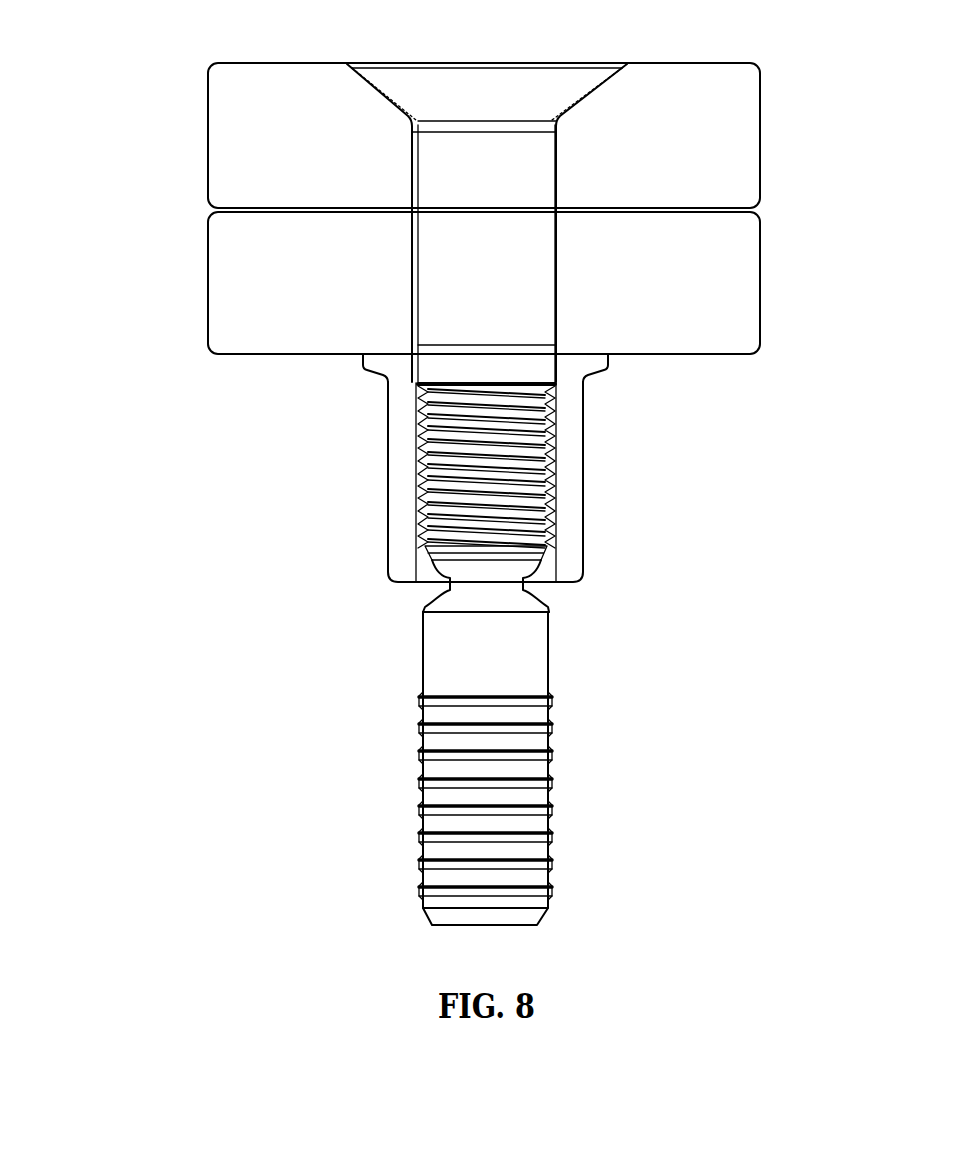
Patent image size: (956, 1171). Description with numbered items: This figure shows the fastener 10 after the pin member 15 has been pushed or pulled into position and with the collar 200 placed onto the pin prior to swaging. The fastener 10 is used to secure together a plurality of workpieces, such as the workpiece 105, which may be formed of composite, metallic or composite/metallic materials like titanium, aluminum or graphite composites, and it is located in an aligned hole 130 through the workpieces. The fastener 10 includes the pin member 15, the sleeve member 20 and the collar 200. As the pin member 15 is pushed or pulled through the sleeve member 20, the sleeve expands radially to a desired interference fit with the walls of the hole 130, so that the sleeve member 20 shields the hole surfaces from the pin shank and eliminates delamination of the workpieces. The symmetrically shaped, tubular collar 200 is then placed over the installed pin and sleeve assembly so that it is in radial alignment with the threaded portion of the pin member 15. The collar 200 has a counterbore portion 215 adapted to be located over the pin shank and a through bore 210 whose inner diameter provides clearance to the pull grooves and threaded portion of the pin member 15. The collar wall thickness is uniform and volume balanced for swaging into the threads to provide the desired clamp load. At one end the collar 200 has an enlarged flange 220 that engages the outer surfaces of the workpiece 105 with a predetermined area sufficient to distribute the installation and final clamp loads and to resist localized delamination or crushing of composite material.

The fastener 10 is at (345, 68).
The pin member 15 is at (545, 68).
The sleeve member 20 is at (561, 245).
The workpiece 105 is at (255, 124).
The aligned hole 130 is at (256, 297).
The collar 200 is at (382, 422).
The through bore 210 is at (420, 530).
The counterbore portion 215 is at (558, 403).
The flange 220 is at (362, 367).